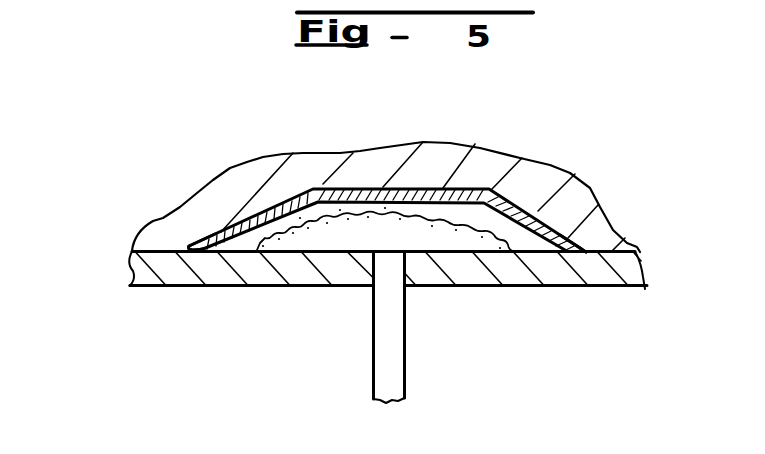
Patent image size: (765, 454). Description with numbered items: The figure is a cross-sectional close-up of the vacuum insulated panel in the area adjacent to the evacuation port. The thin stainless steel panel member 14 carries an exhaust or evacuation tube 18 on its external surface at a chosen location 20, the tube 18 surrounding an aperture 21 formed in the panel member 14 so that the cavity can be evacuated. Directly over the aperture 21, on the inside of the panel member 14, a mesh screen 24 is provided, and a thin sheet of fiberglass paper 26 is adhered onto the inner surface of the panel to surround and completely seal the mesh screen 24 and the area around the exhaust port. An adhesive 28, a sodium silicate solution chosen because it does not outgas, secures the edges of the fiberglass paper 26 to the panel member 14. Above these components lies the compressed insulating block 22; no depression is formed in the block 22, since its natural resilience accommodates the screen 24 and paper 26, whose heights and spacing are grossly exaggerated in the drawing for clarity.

The wall or panel member 14 is at (388, 324).
The exhaust or evacuation tube 18 is at (407, 387).
The location 20 is at (368, 288).
The aperture 21 is at (388, 283).
The block 22 is at (512, 168).
The mesh screen 24 is at (470, 230).
The fiberglass paper 26 is at (442, 205).
The adhesive 28 is at (192, 243).